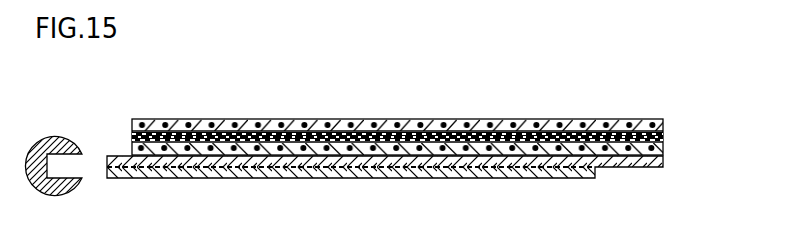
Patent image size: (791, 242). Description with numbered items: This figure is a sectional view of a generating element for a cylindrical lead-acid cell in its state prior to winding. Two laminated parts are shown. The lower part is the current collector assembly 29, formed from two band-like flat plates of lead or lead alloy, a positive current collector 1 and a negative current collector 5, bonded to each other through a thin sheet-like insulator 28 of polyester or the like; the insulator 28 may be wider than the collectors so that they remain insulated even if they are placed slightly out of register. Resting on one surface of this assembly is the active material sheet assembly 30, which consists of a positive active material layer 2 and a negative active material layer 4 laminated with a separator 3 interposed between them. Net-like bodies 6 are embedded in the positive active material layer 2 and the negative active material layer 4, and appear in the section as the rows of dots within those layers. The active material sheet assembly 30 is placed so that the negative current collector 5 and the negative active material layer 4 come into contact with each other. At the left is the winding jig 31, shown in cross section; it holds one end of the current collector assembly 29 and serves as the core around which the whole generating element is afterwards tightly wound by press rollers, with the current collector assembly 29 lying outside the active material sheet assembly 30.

The positive current collector 1 is at (425, 178).
The positive active material layer 2 is at (646, 127).
The separator 3 is at (644, 150).
The negative active material layer 4 is at (657, 162).
The negative current collector 5 is at (612, 160).
The net-like bodies 6 is at (143, 124).
The insulator 28 is at (573, 177).
The current collector assembly 29 is at (198, 179).
The active material sheet assembly 30 is at (660, 115).
The winding jig 31 is at (60, 197).